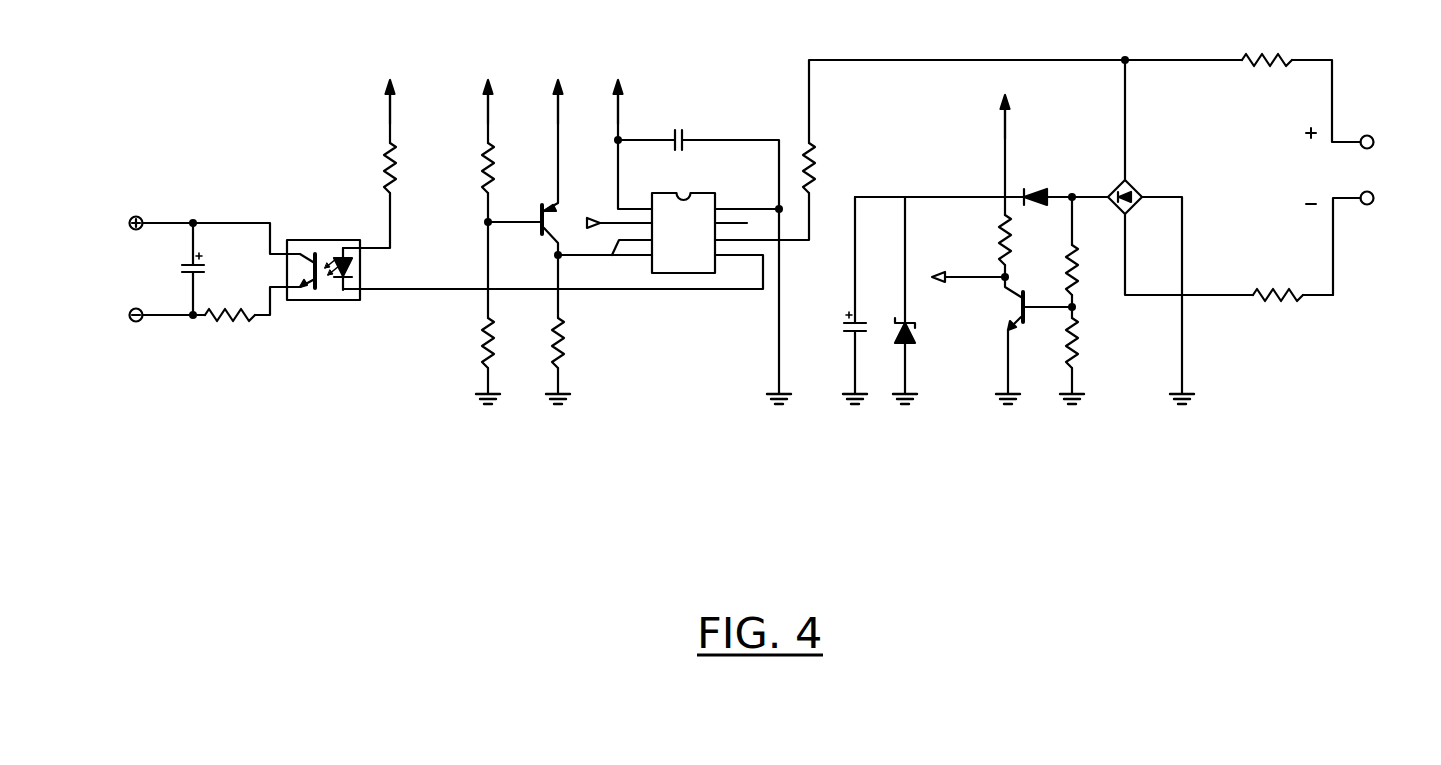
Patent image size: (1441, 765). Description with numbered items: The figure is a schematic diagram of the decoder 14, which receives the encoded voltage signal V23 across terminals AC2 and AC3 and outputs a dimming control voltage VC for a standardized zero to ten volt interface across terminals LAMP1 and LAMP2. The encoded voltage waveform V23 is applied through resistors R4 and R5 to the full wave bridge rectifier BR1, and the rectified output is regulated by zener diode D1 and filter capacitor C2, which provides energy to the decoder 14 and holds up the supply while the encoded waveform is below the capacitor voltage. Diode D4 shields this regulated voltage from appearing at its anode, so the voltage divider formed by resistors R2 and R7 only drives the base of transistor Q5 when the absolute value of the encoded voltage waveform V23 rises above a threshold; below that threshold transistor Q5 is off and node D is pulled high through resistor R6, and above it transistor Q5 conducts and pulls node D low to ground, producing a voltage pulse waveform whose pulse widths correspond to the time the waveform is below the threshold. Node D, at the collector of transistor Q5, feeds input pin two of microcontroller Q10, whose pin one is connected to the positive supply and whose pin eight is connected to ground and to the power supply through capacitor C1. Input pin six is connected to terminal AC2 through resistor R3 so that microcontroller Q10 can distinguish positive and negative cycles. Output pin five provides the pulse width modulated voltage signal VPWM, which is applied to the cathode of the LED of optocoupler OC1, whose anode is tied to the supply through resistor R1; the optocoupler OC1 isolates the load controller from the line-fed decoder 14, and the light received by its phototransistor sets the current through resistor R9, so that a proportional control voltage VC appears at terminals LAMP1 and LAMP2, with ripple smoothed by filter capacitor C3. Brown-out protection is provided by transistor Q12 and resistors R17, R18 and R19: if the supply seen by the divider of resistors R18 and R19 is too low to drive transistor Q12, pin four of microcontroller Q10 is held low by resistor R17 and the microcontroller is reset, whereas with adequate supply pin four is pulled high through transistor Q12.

The decoder 14 is at (763, 308).
The terminal LAMP1 is at (195, 214).
The terminal LAMP2 is at (195, 329).
The dimming control voltage VC is at (146, 269).
The filter capacitor C3 is at (211, 269).
The resistor R9 is at (230, 336).
The optocoupler OC1 is at (338, 269).
The pulse width modulated voltage signal VPWM is at (553, 293).
The resistor R1 is at (371, 136).
The resistor R19 is at (465, 199).
The resistor R18 is at (468, 361).
The transistor Q12 is at (545, 199).
The resistor R17 is at (581, 361).
The microcontroller Q10 is at (698, 176).
The capacitor C1 is at (704, 246).
The resistor R3 is at (1022, 124).
The resistor R5 is at (1301, 77).
The terminal AC2 is at (1396, 131).
The terminal AC3 is at (1382, 241).
The encoded voltage signal V23 is at (1311, 166).
The full wave bridge rectifier BR1 is at (1180, 232).
The resistor R4 is at (1293, 275).
The diode D4 is at (981, 175).
The resistor R6 is at (986, 186).
The node D is at (988, 273).
The transistor Q5 is at (1019, 340).
The resistor R2 is at (1091, 257).
The resistor R7 is at (1088, 361).
The filter capacitor C2 is at (842, 300).
The zener diode D1 is at (920, 300).